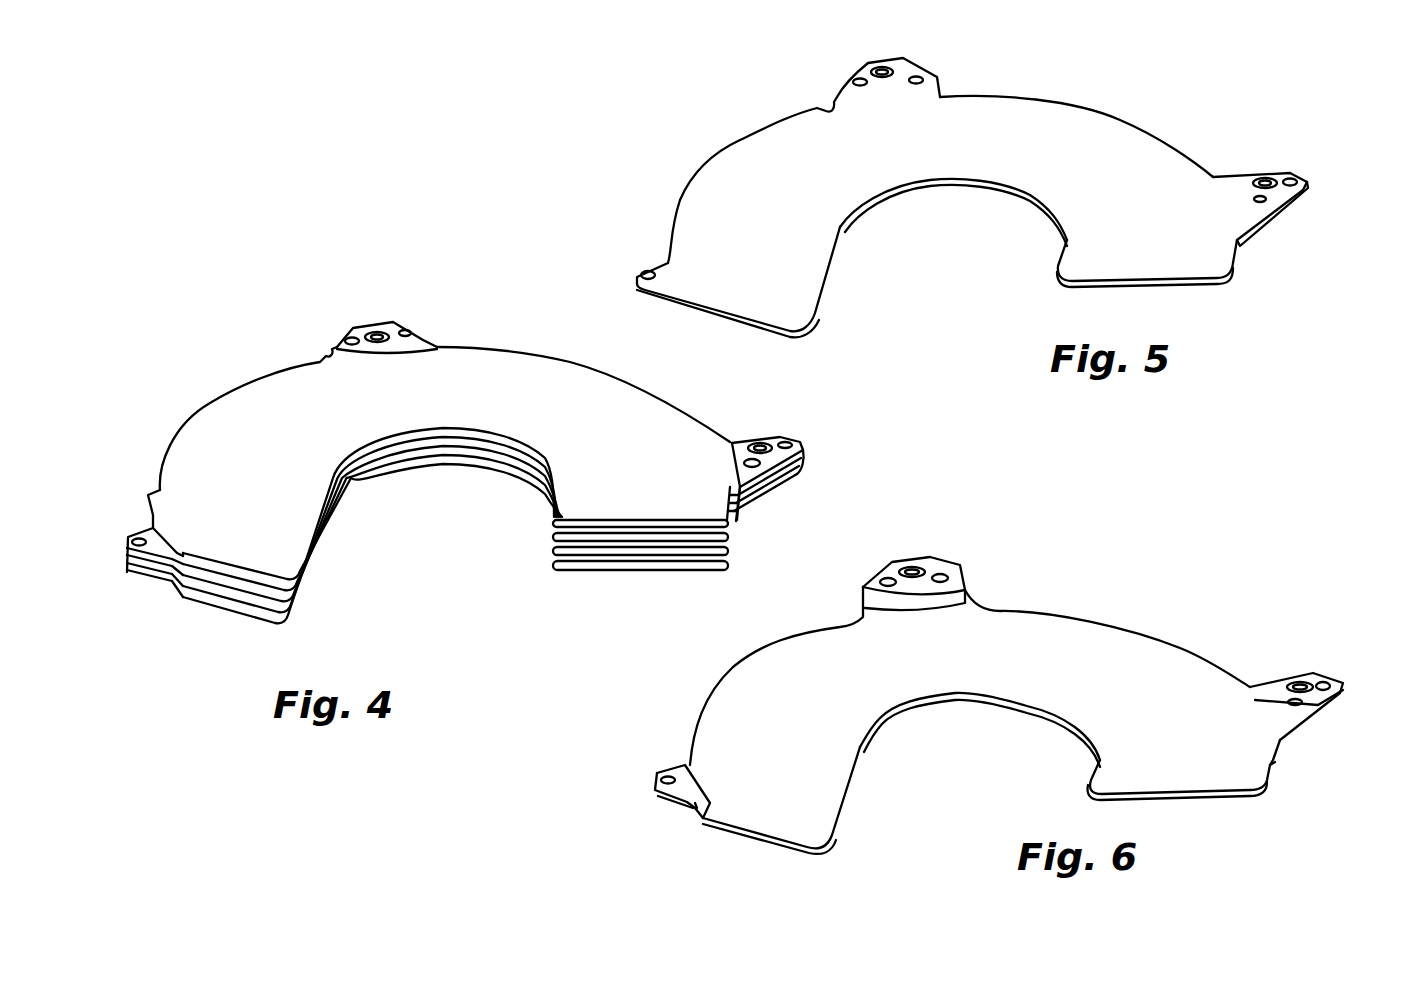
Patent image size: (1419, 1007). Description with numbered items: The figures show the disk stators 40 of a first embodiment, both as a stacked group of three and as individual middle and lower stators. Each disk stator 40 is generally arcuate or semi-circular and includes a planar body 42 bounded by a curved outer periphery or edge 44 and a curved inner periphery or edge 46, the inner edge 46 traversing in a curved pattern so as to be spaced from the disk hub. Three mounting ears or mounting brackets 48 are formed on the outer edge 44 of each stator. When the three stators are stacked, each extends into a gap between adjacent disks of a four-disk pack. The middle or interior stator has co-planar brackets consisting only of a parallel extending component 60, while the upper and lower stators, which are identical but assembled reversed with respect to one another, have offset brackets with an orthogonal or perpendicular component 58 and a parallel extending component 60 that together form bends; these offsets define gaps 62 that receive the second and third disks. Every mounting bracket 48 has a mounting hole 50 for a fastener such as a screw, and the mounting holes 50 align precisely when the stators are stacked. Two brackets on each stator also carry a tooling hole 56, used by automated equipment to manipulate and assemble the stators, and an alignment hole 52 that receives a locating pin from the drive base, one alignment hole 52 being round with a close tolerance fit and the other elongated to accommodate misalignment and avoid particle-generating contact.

In FIG. 5, the disk stator 40 is at (1128, 94).
In FIG. 6, the disk stator 40 is at (1200, 637).
In FIG. 4, the planar body 42 is at (501, 395).
In FIG. 5, the planar body 42 is at (764, 258).
In FIG. 6, the planar body 42 is at (789, 783).
In FIG. 4, the curved outer periphery or edge 44 is at (512, 350).
In FIG. 5, the curved outer periphery or edge 44 is at (730, 150).
In FIG. 6, the curved outer periphery or edge 44 is at (1100, 618).
In FIG. 4, the curved inner periphery or edge 46 is at (473, 473).
In FIG. 5, the curved inner periphery or edge 46 is at (930, 188).
In FIG. 6, the curved inner periphery or edge 46 is at (970, 705).
In FIG. 4, the mounting ears or mounting brackets 48 is at (390, 290).
In FIG. 5, the mounting ears or mounting brackets 48 is at (928, 44).
In FIG. 6, the mounting ears or mounting brackets 48 is at (979, 574).
In FIG. 4, the mounting hole 50 is at (377, 332).
In FIG. 5, the mounting hole 50 is at (882, 68).
In FIG. 6, the mounting hole 50 is at (912, 567).
In FIG. 4, the alignment hole 52 is at (407, 330).
In FIG. 5, the alignment hole 52 is at (916, 84).
In FIG. 6, the alignment hole 52 is at (941, 575).
In FIG. 4, the tooling hole 56 is at (345, 340).
In FIG. 5, the tooling hole 56 is at (855, 82).
In FIG. 6, the tooling hole 56 is at (885, 580).
In FIG. 4, the orthogonal or perpendicular component 58 is at (160, 490).
In FIG. 6, the orthogonal or perpendicular component 58 is at (710, 805).
In FIG. 4, the parallel extending component 60 is at (127, 548).
In FIG. 5, the parallel extending component 60 is at (938, 85).
In FIG. 6, the parallel extending component 60 is at (963, 560).
In FIG. 4, the gap 62 is at (287, 611).